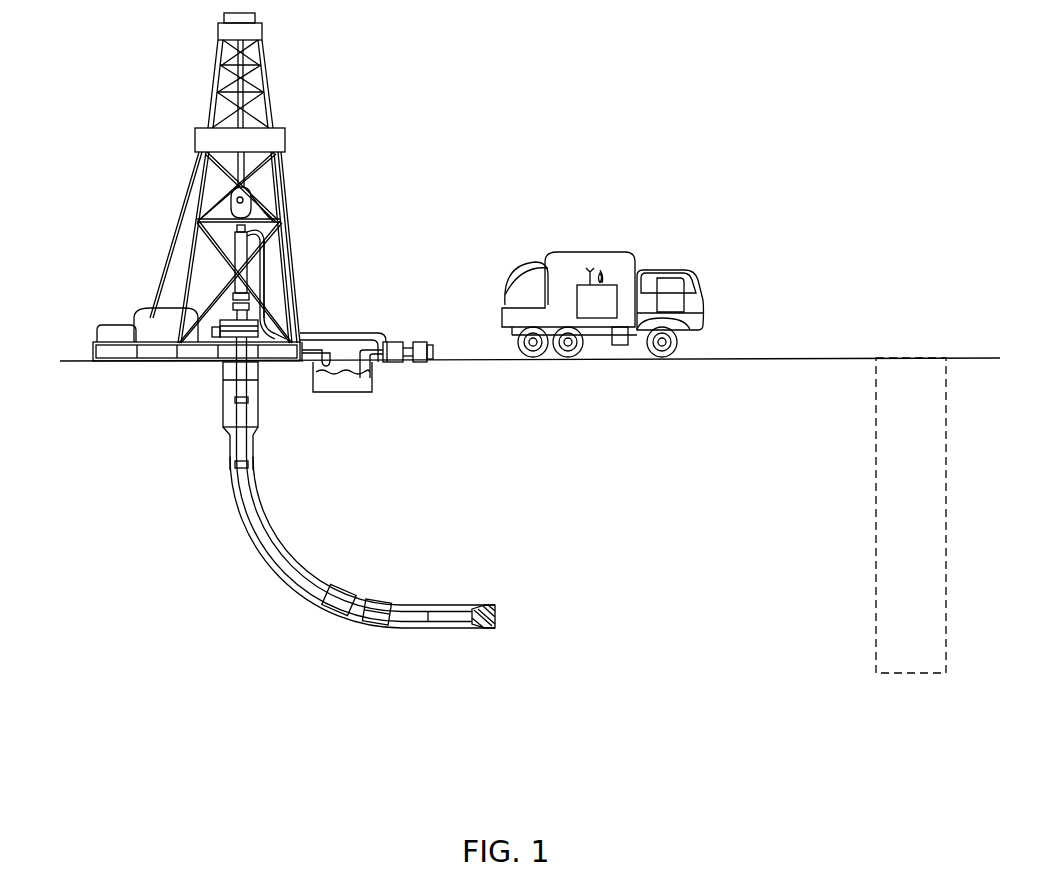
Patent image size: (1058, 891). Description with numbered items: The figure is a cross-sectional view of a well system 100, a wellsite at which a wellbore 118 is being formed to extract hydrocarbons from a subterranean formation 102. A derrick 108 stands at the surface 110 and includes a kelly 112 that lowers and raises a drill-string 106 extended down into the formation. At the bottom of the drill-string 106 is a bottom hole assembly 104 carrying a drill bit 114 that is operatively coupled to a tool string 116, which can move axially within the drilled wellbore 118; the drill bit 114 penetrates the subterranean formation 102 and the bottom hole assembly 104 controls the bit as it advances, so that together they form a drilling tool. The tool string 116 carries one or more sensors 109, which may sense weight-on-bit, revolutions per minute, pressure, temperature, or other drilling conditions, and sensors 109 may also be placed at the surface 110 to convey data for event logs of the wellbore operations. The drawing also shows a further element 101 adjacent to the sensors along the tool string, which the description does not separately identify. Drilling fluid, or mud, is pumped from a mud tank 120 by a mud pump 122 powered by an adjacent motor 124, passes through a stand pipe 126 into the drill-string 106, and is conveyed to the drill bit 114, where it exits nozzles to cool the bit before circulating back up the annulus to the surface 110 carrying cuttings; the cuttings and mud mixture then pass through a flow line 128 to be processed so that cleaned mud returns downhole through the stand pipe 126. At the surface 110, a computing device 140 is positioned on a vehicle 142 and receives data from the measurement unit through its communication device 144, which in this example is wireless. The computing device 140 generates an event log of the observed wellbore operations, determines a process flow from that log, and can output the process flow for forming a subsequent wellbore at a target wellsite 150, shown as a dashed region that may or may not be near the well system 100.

The well system 100 is at (426, 182).
The downhole tool 101 is at (383, 620).
The subterranean formation 102 is at (85, 402).
The bottom hole assembly 104 is at (437, 610).
The drill-string 106 is at (245, 488).
The derrick 108 is at (197, 196).
The sensors 109 is at (334, 608).
The surface 110 is at (68, 361).
The kelly 112 is at (248, 200).
The drill bit 114 is at (497, 613).
The tool string 116 is at (472, 603).
The wellbore 118 is at (230, 456).
The mud tank 120 is at (348, 383).
The mud pump 122 is at (398, 341).
The motor 124 is at (431, 343).
The stand pipe 126 is at (268, 272).
The flow line 128 is at (325, 341).
The computing device 140 is at (580, 300).
The vehicle 142 is at (704, 331).
The communication device 144 is at (597, 270).
The target wellsite 150 is at (902, 367).